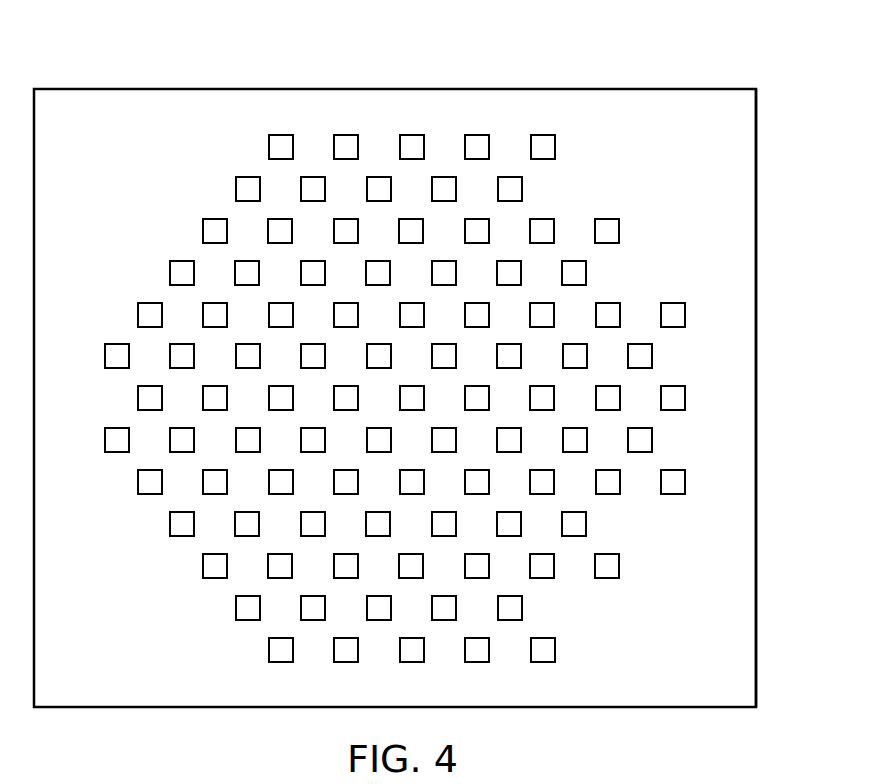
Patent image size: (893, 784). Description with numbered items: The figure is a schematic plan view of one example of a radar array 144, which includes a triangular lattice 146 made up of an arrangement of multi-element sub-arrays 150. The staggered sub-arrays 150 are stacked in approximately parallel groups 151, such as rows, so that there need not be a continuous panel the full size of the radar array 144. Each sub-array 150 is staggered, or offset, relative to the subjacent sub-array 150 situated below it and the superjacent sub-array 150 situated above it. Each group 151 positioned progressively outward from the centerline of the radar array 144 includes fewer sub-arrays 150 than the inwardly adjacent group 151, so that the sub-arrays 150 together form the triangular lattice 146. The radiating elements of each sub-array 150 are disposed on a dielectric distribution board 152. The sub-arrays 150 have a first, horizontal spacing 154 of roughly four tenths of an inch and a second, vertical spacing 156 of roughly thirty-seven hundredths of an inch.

The radar array 144 is at (720, 74).
The triangular lattice 146 is at (661, 197).
The multi-element sub-array 150 is at (673, 302).
The group of sub-arrays 151 is at (155, 263).
The distribution board 152 is at (756, 143).
The first spacing 154 is at (510, 110).
The second spacing 156 is at (268, 147).